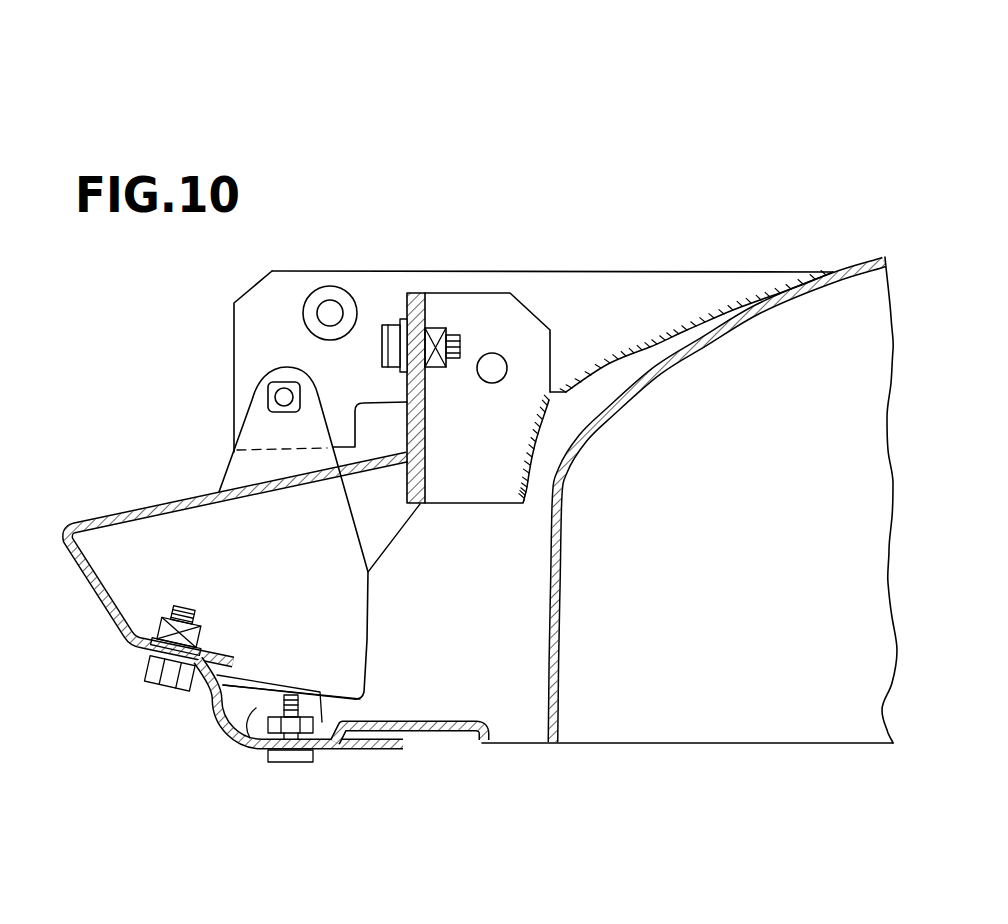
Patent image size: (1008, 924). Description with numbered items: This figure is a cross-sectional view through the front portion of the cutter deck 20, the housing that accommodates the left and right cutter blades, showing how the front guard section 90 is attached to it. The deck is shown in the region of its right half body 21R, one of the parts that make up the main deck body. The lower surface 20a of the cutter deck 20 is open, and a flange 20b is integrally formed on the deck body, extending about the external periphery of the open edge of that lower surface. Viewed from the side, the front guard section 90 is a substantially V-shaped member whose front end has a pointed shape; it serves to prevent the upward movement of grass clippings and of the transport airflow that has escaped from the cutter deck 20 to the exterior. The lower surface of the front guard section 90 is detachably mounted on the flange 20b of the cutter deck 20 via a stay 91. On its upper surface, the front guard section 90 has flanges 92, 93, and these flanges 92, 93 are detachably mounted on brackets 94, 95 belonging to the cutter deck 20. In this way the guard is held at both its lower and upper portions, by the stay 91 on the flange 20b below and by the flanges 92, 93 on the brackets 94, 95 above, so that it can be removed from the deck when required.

The cutter deck 20 is at (794, 142).
The lower surface 20a is at (588, 745).
The flange 20b is at (257, 752).
The right half body 21R is at (655, 358).
The front guard section 90 is at (98, 614).
The stay 91 is at (215, 722).
The flange 92 is at (397, 300).
The flange 93 is at (253, 413).
The bracket 94 is at (483, 298).
The bracket 95 is at (250, 330).